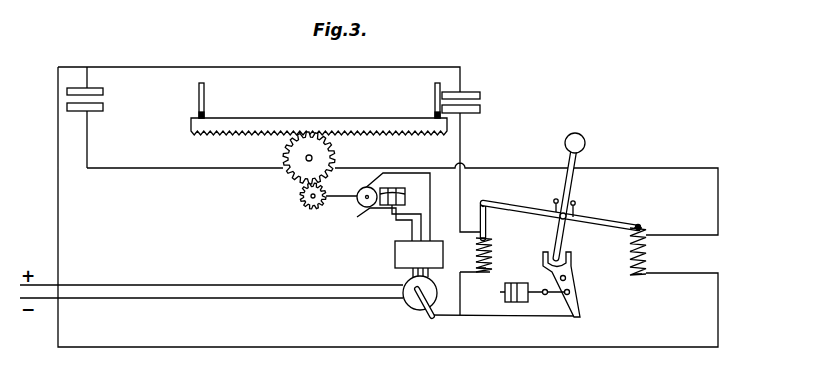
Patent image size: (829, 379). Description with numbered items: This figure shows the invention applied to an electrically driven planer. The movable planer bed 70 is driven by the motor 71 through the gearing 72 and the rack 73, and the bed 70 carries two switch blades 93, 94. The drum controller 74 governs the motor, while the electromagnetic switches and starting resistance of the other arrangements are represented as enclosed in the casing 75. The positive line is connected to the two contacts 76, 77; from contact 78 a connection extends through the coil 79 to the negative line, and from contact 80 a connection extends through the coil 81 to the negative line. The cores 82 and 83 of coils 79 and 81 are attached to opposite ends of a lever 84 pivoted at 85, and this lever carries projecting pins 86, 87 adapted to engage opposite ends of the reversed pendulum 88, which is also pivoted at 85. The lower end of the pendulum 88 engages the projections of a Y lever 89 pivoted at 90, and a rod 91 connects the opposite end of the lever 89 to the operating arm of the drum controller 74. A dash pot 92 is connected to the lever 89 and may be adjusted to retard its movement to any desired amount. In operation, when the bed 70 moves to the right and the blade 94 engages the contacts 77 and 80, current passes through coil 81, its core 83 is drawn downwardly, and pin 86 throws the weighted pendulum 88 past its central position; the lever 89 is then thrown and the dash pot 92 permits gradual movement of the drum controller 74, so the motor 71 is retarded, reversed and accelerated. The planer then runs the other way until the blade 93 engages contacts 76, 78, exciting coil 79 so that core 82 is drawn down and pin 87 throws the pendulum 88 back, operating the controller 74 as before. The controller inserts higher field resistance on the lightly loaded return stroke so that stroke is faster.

The movable planer bed 70 is at (326, 118).
The motor 71 is at (357, 207).
The gearing 72 is at (300, 196).
The rack 73 is at (244, 136).
The drum controller 74 is at (410, 297).
The casing 75 is at (395, 250).
The contact 76 is at (93, 94).
The contact 77 is at (466, 92).
The contact 78 is at (94, 111).
The coil 79 is at (653, 251).
The contact 80 is at (466, 113).
The coil 81 is at (491, 250).
The core 82 is at (643, 232).
The core 83 is at (488, 225).
The lever 84 is at (618, 221).
The pivot 85 is at (558, 219).
The projecting pin 86 is at (577, 203).
The projecting pin 87 is at (554, 201).
The reversed pendulum 88 is at (573, 181).
The Y lever 89 is at (571, 258).
The pivot 90 is at (566, 279).
The rod 91 is at (488, 316).
The dash pot 92 is at (515, 284).
The switch blade 93 is at (205, 99).
The switch blade 94 is at (434, 97).